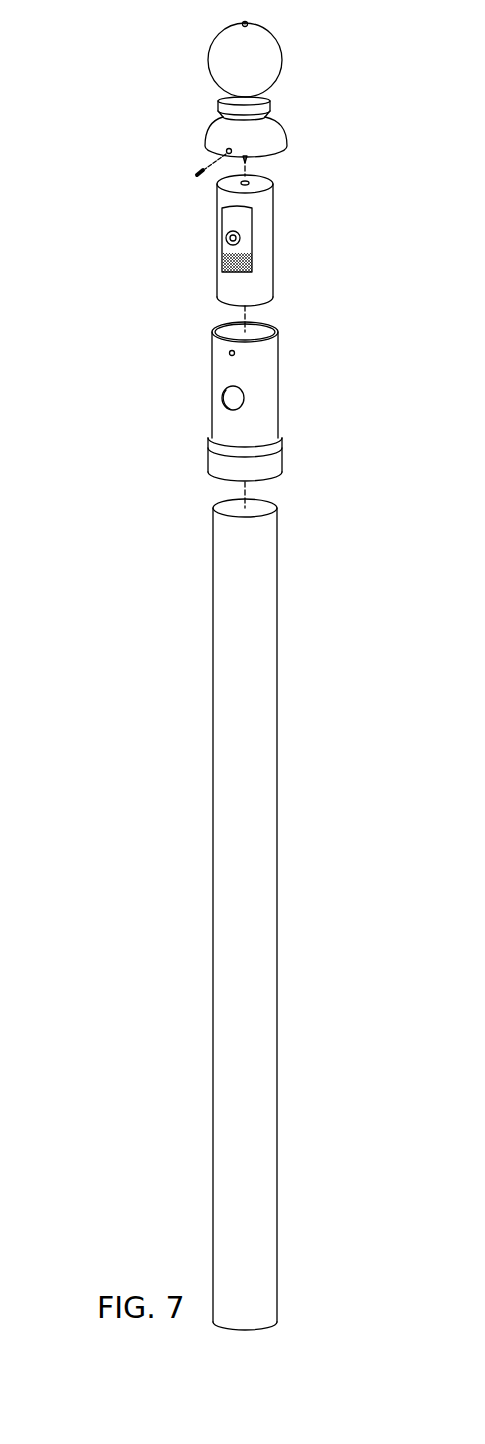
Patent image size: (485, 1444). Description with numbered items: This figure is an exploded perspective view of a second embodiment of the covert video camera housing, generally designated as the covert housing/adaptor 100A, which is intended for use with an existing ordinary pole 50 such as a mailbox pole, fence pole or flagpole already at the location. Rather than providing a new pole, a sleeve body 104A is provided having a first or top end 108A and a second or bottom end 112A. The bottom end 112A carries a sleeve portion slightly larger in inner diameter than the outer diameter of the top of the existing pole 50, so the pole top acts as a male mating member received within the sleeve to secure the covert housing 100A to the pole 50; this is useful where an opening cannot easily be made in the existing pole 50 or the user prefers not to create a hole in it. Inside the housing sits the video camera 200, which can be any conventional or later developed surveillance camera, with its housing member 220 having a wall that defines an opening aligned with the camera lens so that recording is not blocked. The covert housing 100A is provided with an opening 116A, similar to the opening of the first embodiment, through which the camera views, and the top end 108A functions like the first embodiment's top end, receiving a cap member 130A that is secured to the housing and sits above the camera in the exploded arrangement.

The covert housing/adaptor 100A is at (116, 249).
The cap member 130A is at (320, 61).
The video camera 200 is at (318, 234).
The housing member 220 is at (260, 282).
The sleeve body 104A is at (320, 416).
The top end 108A is at (273, 328).
The opening 116A is at (243, 403).
The bottom end 112A is at (272, 478).
The existing ordinary pole 50 is at (258, 871).